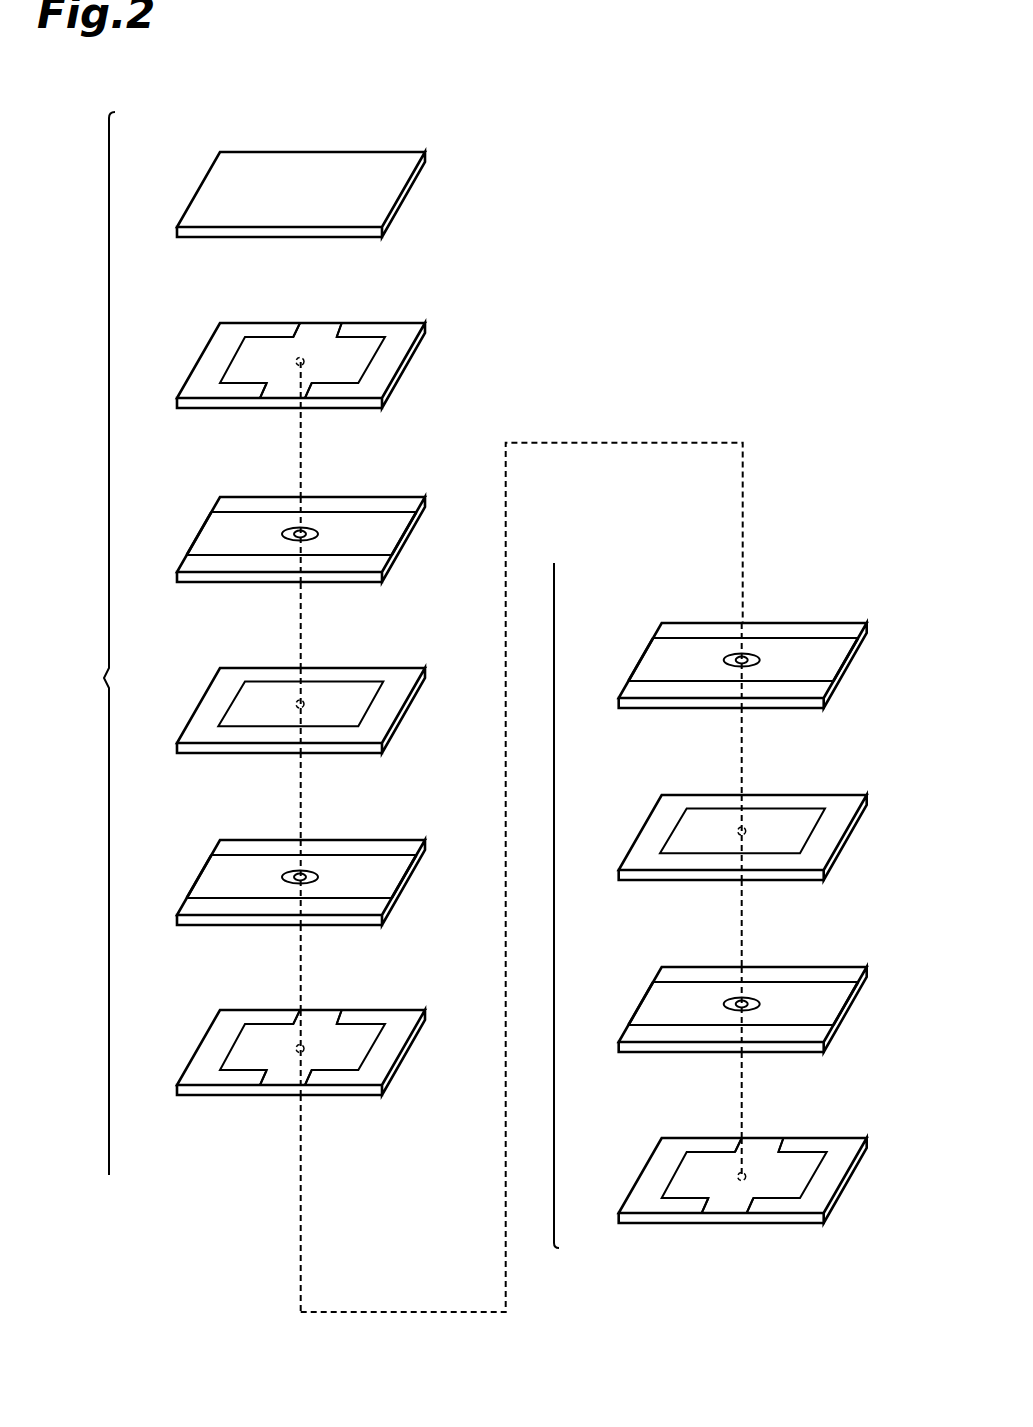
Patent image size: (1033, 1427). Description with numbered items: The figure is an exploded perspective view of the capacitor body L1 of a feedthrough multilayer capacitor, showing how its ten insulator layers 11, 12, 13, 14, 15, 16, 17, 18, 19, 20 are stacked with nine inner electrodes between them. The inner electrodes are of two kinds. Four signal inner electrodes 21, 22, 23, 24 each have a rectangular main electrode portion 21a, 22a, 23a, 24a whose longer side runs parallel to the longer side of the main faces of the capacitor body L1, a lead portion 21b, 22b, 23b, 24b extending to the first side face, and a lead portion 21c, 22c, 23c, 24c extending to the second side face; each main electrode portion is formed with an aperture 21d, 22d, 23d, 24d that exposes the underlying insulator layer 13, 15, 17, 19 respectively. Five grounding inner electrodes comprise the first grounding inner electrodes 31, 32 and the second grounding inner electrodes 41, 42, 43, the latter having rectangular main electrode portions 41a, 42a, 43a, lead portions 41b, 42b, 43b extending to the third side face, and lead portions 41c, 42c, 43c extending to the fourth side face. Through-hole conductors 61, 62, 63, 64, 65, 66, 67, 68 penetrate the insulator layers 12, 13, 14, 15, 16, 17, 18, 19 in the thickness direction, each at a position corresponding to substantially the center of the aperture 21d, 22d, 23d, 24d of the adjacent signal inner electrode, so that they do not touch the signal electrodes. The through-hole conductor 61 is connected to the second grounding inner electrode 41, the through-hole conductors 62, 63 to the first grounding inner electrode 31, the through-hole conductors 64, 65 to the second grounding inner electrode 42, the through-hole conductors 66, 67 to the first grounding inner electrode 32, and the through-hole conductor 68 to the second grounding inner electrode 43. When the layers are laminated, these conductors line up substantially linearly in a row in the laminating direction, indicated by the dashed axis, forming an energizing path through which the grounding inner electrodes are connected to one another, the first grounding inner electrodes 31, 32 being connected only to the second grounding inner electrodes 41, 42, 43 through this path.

The insulator layer 11 is at (315, 168).
The insulator layer 12 is at (316, 341).
The insulator layer 13 is at (316, 514).
The insulator layer 14 is at (316, 685).
The insulator layer 15 is at (316, 857).
The insulator layer 16 is at (316, 1028).
The insulator layer 17 is at (758, 640).
The insulator layer 18 is at (758, 812).
The insulator layer 19 is at (758, 984).
The insulator layer 20 is at (758, 1156).
The signal inner electrode 21 is at (329, 524).
The main electrode portion 21a is at (272, 488).
The lead portion 21b is at (170, 529).
The lead portion 21c is at (438, 537).
The aperture 21d is at (262, 576).
The signal inner electrode 22 is at (329, 867).
The main electrode portion 22a is at (272, 831).
The lead portion 22b is at (170, 872).
The lead portion 22c is at (438, 880).
The aperture 22d is at (262, 919).
The signal inner electrode 23 is at (770, 650).
The main electrode portion 23a is at (713, 614).
The lead portion 23b is at (612, 655).
The lead portion 23c is at (880, 663).
The aperture 23d is at (704, 702).
The signal inner electrode 24 is at (770, 994).
The main electrode portion 24a is at (713, 958).
The lead portion 24b is at (612, 999).
The lead portion 24c is at (880, 1007).
The aperture 24d is at (704, 1046).
The first grounding inner electrode 31 is at (345, 697).
The first grounding inner electrode 32 is at (787, 824).
The second grounding inner electrode 41 is at (346, 360).
The main electrode portion 41a is at (384, 378).
The lead portion 41b is at (276, 418).
The lead portion 41c is at (323, 309).
The second grounding inner electrode 42 is at (346, 1047).
The main electrode portion 42a is at (384, 1065).
The lead portion 42b is at (276, 1105).
The lead portion 42c is at (323, 996).
The second grounding inner electrode 43 is at (788, 1175).
The main electrode portion 43a is at (826, 1193).
The lead portion 43b is at (718, 1233).
The lead portion 43c is at (765, 1124).
The through-hole conductor 61 is at (337, 429).
The through-hole conductor 62 is at (337, 625).
The through-hole conductor 63 is at (337, 796).
The through-hole conductor 64 is at (337, 967).
The through-hole conductor 65 is at (337, 1203).
The through-hole conductor 66 is at (778, 751).
The through-hole conductor 67 is at (778, 923).
The through-hole conductor 68 is at (778, 1095).
The capacitor body L1 is at (87, 643).